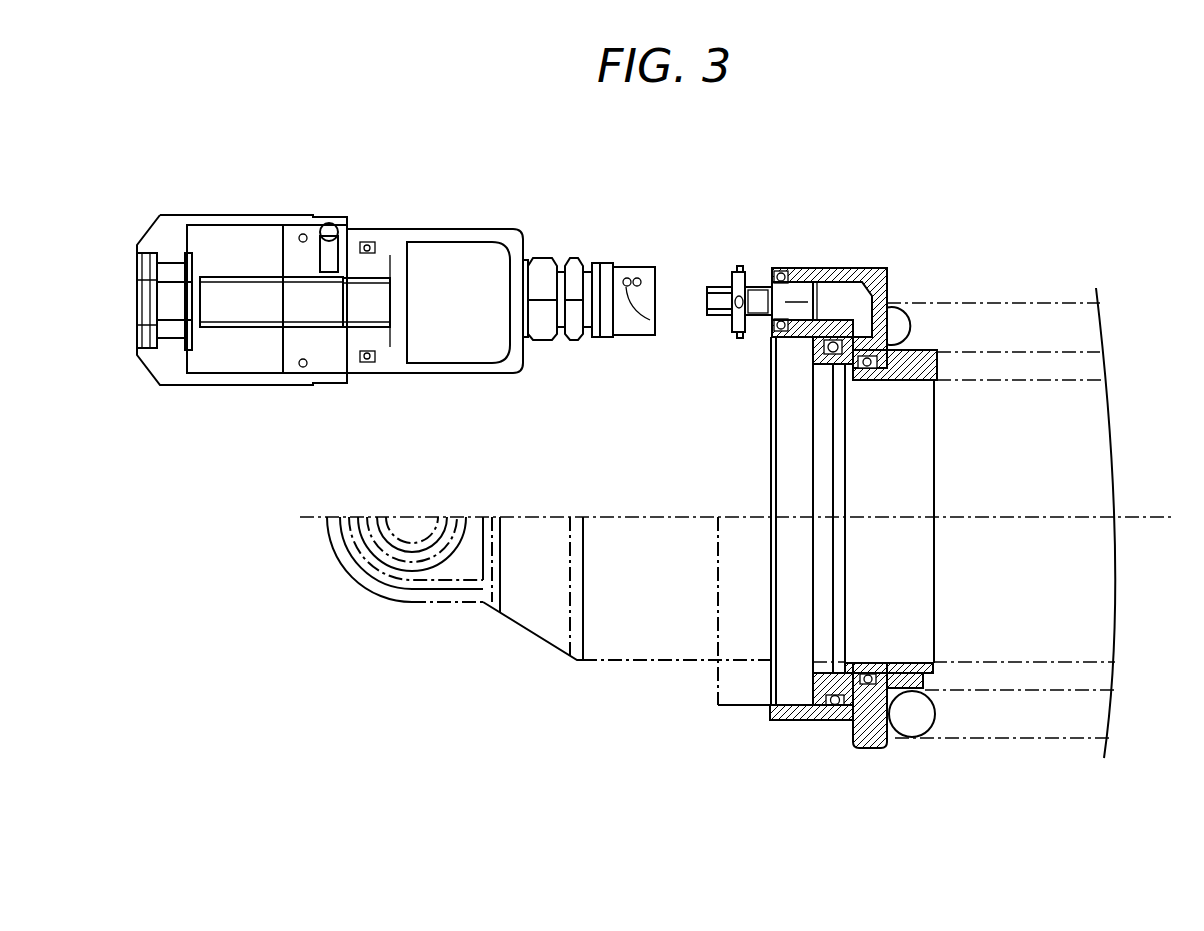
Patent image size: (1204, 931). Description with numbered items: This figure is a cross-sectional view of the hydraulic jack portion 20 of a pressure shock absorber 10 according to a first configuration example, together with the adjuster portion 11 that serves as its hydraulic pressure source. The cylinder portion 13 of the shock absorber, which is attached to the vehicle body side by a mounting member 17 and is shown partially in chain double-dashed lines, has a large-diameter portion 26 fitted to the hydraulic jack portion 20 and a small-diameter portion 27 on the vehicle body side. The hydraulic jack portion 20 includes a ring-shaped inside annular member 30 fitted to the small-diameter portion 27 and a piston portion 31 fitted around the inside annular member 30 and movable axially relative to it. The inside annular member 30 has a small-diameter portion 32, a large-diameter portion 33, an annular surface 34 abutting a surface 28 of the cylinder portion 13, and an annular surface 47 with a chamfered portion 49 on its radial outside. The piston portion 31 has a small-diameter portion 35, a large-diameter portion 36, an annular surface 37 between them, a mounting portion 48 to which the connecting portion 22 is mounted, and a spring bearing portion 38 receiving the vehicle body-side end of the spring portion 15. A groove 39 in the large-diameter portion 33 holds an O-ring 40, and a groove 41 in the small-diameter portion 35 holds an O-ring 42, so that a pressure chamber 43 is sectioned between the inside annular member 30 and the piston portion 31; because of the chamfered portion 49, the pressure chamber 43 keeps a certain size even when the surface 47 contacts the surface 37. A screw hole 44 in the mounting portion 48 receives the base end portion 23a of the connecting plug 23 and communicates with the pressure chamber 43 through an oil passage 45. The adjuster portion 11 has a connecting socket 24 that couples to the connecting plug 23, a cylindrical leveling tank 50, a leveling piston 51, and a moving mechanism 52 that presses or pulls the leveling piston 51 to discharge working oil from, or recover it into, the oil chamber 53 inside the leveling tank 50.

The pressure shock absorber 10 is at (550, 656).
The adjuster portion 11 is at (356, 192).
The cylinder portion 13 is at (717, 683).
The spring portion 15 is at (912, 727).
The mounting member 17 is at (355, 575).
The hydraulic jack portion 20 is at (862, 222).
The connecting portion 22 is at (888, 250).
The connecting plug 23 is at (712, 285).
The base end portion 23a is at (793, 287).
The connecting socket 24 is at (625, 265).
The large-diameter portion 26 is at (787, 722).
The small-diameter portion 27 is at (1018, 665).
The surface 28 is at (812, 721).
The inside annular member 30 is at (940, 673).
The piston portion 31 is at (757, 707).
The small-diameter portion 32 is at (920, 657).
The large-diameter portion 33 is at (777, 690).
The annular surface 34 is at (808, 678).
The small-diameter portion 35 is at (927, 353).
The large-diameter portion 36 is at (846, 720).
The annular surface 37 is at (870, 662).
The spring bearing portion 38 is at (878, 740).
The groove 39 is at (808, 357).
The O-ring 40 is at (813, 342).
The groove 41 is at (920, 377).
The O-ring 42 is at (880, 385).
The pressure chamber 43 is at (840, 692).
The screw hole 44 is at (805, 283).
The oil passage 45 is at (892, 308).
The annular surface 47 is at (885, 700).
The mounting portion 48 is at (833, 264).
The chamfered portion 49 is at (848, 706).
The leveling tank 50 is at (508, 365).
The leveling piston 51 is at (397, 350).
The moving mechanism 52 is at (232, 192).
The oil chamber 53 is at (470, 257).